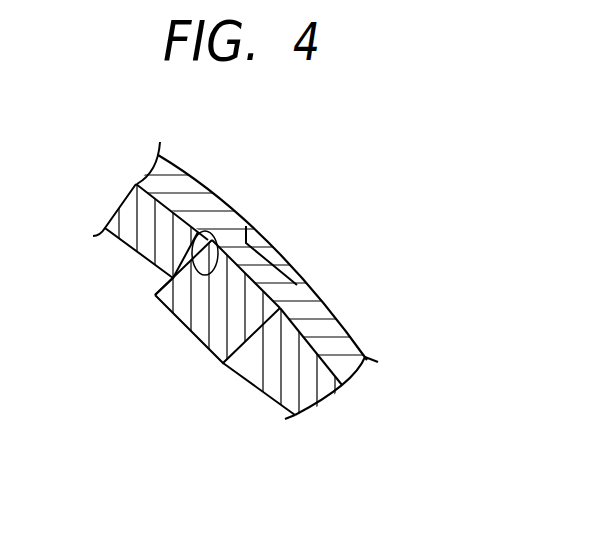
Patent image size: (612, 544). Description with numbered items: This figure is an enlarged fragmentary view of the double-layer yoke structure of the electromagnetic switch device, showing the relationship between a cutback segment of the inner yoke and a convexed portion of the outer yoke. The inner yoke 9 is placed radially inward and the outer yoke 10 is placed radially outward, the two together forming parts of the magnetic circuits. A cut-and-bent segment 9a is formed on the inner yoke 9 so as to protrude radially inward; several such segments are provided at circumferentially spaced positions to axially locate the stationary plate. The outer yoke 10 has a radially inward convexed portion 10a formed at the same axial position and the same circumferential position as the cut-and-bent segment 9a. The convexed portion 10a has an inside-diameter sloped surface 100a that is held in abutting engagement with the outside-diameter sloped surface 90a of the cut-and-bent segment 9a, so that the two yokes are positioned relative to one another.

The inner yoke 9 is at (287, 375).
The cut-and-bent segment 9a is at (202, 315).
The outer yoke 10 is at (342, 346).
The convexed portion 10a is at (253, 265).
The outside-diameter sloped surface 90a is at (253, 282).
The inside-diameter sloped surface 100a is at (204, 234).